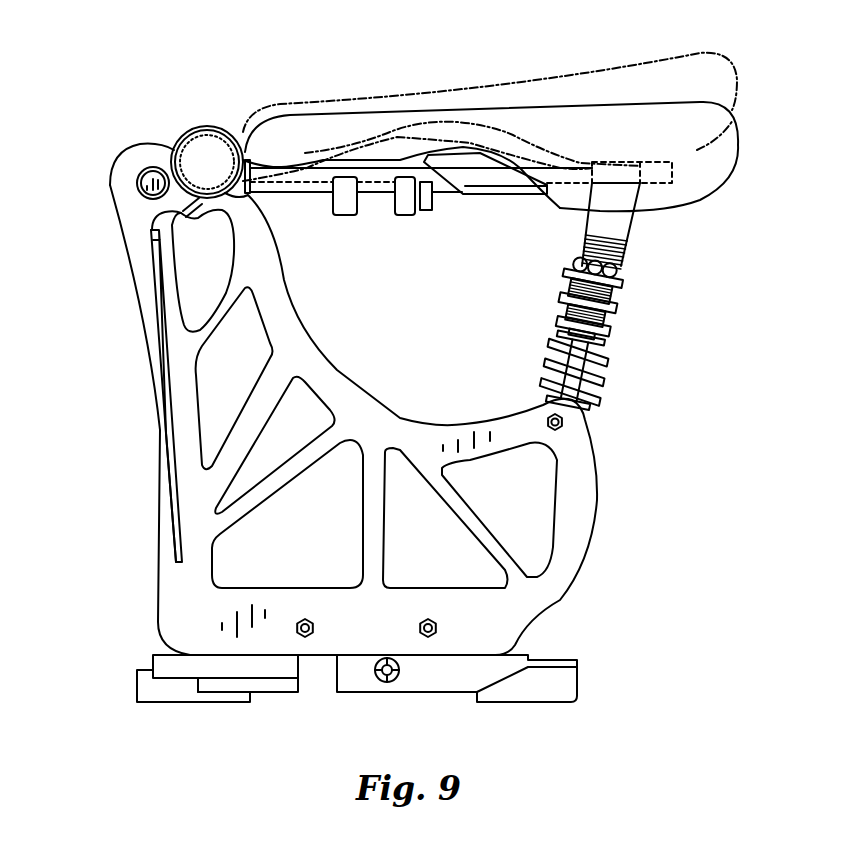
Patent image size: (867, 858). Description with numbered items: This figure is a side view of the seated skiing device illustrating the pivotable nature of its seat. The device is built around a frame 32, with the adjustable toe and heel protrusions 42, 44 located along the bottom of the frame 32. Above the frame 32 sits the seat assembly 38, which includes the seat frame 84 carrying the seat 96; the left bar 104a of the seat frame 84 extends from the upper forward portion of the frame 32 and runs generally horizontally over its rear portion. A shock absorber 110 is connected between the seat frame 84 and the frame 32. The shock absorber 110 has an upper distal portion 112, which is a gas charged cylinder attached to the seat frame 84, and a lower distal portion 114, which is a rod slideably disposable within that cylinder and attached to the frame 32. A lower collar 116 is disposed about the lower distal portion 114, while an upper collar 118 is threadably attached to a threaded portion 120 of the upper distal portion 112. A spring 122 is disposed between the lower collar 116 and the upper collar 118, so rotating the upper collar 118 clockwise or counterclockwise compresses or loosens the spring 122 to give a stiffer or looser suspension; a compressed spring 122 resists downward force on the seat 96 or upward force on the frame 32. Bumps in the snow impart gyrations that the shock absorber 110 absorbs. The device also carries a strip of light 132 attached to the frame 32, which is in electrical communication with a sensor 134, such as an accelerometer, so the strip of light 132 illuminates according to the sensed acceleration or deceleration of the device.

The frame 32 is at (77, 152).
The strip of light 132 is at (163, 368).
The seat frame 84 is at (227, 112).
The seat 96 is at (602, 118).
The seat assembly 38 is at (750, 60).
The sensor 134 is at (375, 215).
The left bar 104a is at (436, 182).
The upper collar 118 is at (567, 266).
The threaded portion 120 is at (624, 247).
The upper distal portion 112 is at (677, 183).
The shock absorber 110 is at (733, 180).
The lower distal portion 114 is at (677, 337).
The spring 122 is at (598, 372).
The lower collar 116 is at (587, 407).
The toe protrusion 42 is at (268, 685).
The heel protrusion 44 is at (347, 682).